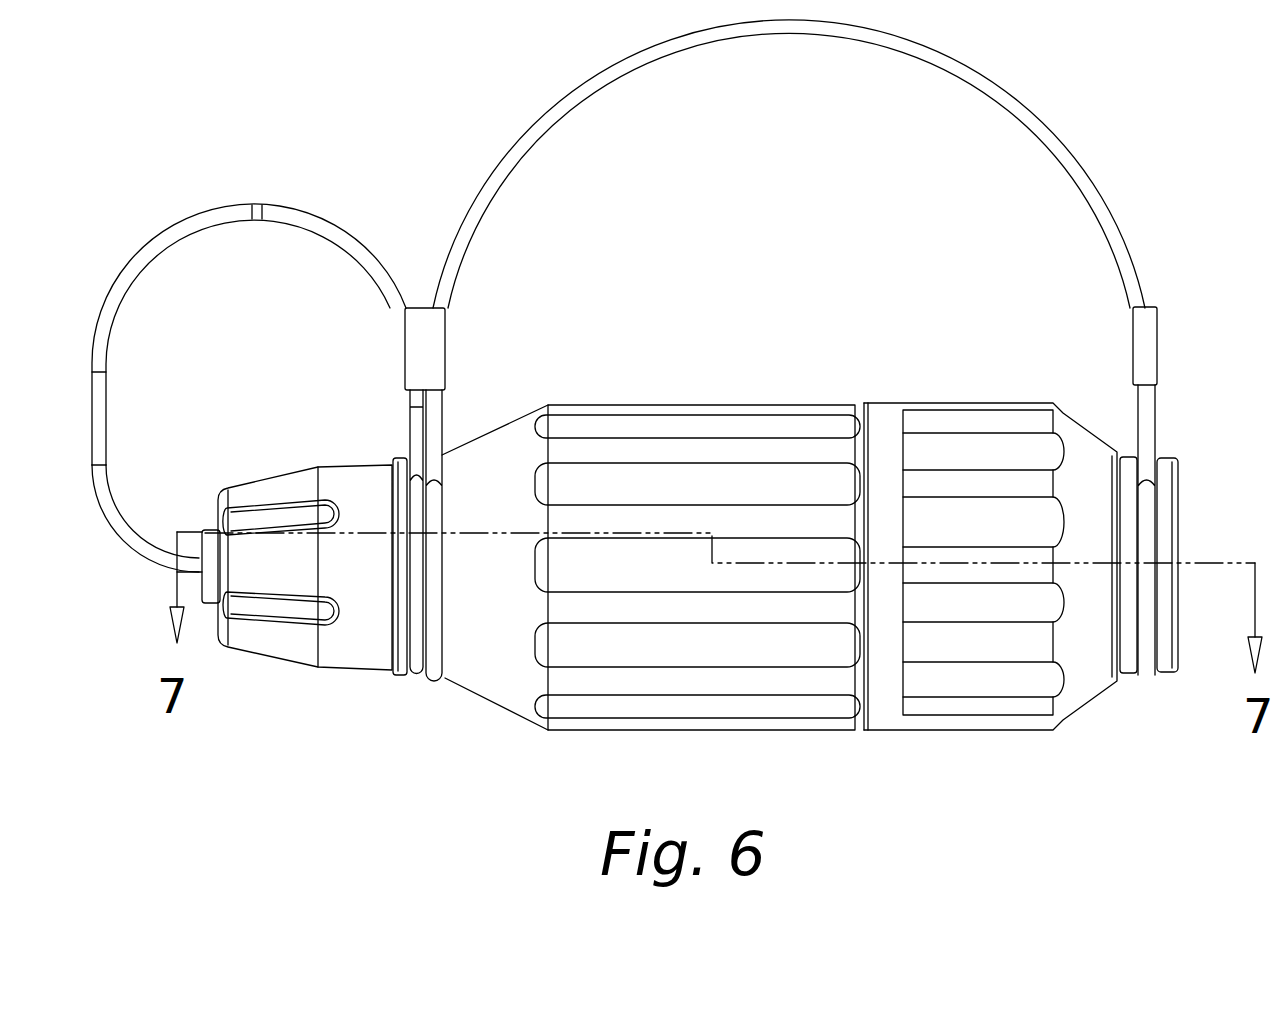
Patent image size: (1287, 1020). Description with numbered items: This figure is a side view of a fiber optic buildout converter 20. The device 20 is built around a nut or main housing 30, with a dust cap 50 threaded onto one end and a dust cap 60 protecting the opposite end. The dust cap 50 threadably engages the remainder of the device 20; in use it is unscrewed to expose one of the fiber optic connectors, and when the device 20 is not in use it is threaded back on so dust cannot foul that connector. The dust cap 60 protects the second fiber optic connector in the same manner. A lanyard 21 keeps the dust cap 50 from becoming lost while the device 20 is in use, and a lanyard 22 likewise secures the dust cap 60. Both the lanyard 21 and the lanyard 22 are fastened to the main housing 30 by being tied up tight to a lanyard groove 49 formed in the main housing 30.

The fiber optic buildout converter 20 is at (1272, 248).
The main housing 30 is at (625, 405).
The dust cap 60 is at (1000, 403).
The dust cap 50 is at (345, 463).
The lanyard 21 is at (420, 676).
The lanyard 22 is at (428, 680).
The lanyard groove 49 is at (436, 679).